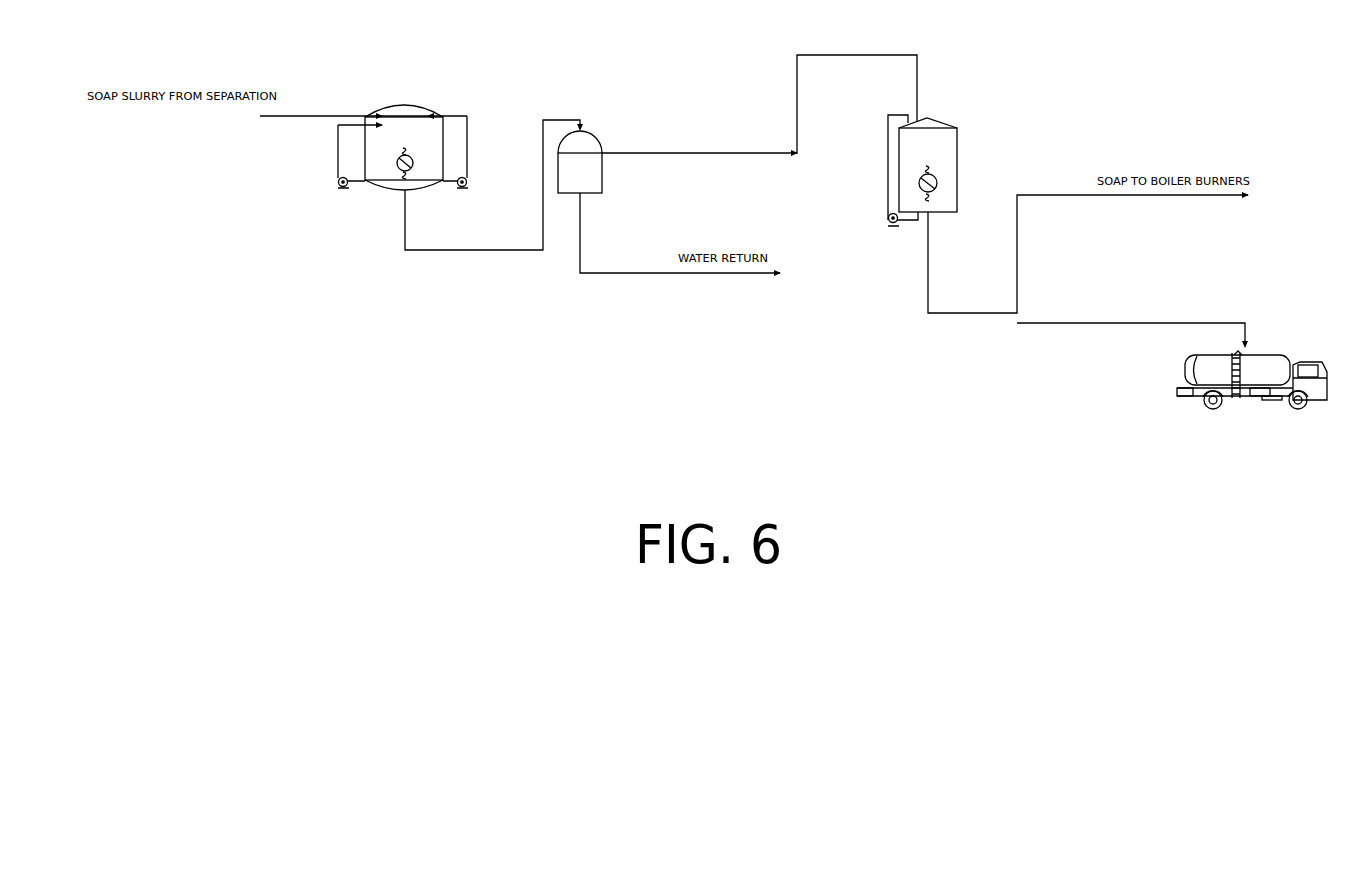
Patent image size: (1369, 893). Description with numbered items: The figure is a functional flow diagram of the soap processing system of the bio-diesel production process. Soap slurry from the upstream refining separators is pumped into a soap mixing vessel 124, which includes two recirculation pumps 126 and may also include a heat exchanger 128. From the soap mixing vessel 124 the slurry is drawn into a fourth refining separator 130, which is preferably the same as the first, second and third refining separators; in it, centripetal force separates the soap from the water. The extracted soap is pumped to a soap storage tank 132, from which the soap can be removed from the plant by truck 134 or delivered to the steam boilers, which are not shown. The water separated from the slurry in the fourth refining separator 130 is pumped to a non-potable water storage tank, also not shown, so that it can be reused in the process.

The soap mixing vessel 124 is at (365, 148).
The recirculation pumps 126 is at (338, 181).
The heat exchanger 128 is at (398, 160).
The fourth refining separator 130 is at (587, 128).
The soap storage tank 132 is at (938, 120).
The truck 134 is at (1198, 371).